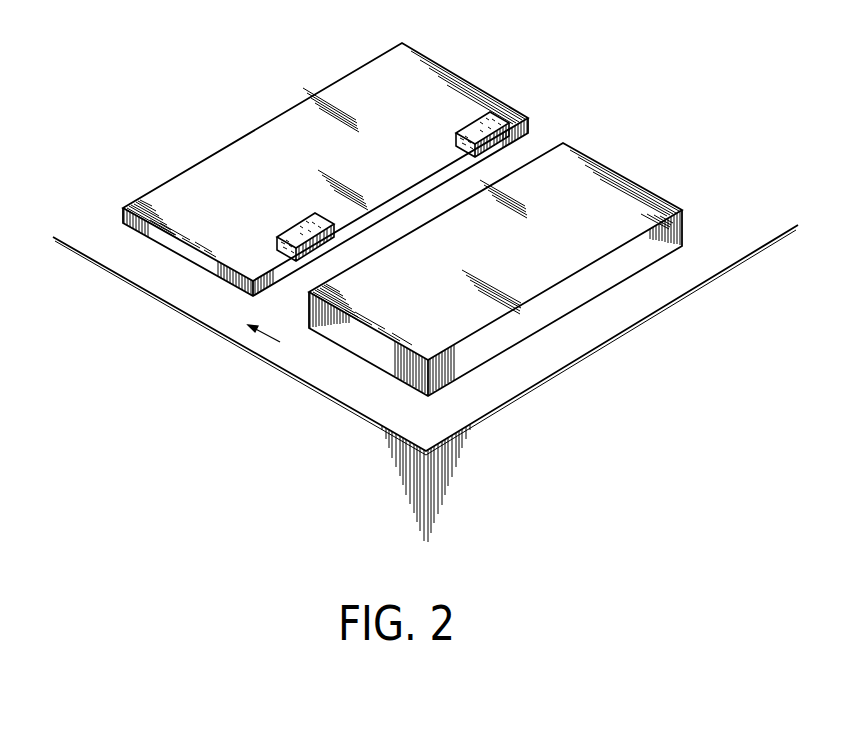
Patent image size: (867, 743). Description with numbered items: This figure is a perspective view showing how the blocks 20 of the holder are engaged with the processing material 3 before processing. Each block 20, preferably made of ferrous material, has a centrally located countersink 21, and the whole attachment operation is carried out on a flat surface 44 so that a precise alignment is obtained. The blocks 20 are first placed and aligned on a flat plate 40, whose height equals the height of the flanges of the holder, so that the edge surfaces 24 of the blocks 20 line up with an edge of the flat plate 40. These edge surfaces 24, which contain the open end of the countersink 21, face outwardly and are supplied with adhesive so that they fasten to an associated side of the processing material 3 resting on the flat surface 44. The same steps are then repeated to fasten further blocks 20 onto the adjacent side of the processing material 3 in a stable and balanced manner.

The flat surface 44 is at (590, 82).
The flat plate 40 is at (413, 63).
The block 20 is at (492, 118).
The edge surface 24 is at (527, 135).
The countersink 21 is at (489, 150).
The processing material 3 is at (600, 193).